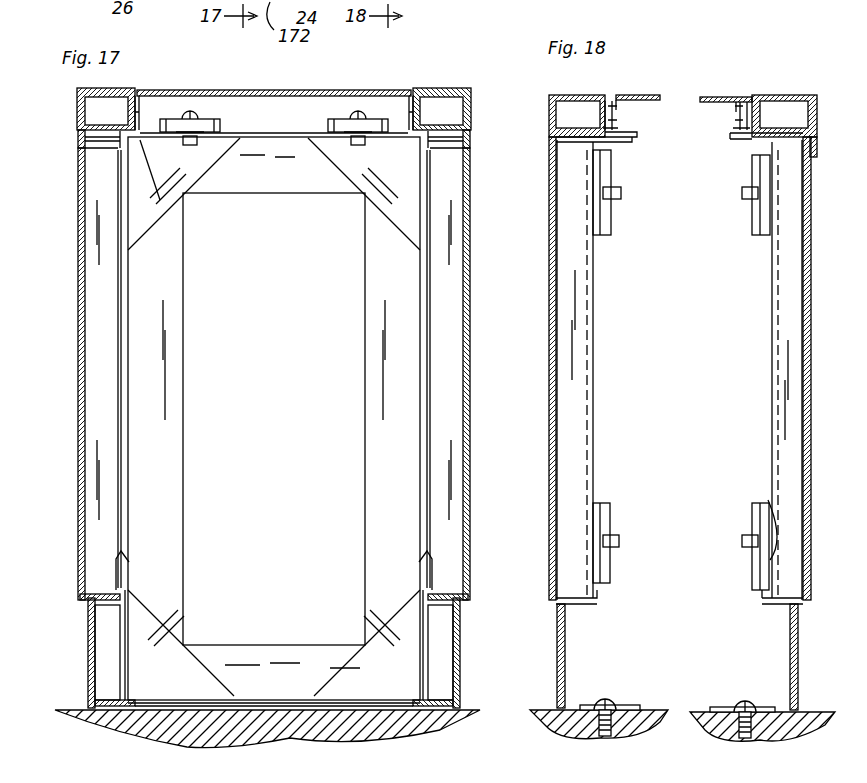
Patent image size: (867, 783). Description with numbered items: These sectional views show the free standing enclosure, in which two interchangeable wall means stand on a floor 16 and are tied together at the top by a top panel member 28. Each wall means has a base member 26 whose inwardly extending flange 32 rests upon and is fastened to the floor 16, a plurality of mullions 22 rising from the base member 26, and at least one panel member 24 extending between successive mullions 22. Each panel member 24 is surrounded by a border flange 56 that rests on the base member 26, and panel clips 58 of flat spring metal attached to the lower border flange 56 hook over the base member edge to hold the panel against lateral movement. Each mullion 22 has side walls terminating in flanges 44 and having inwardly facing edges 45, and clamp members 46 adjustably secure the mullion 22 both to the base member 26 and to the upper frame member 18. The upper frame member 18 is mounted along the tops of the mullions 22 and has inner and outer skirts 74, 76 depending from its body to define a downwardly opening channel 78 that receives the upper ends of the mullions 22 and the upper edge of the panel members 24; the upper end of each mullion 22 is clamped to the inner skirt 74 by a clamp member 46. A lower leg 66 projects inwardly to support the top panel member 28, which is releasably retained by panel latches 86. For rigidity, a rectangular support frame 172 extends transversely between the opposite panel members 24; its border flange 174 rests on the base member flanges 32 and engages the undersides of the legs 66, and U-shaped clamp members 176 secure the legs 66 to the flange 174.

In FIG. 17, the floor 16 is at (78, 710).
In FIG. 18, the floor 16 is at (550, 710).
In FIG. 17, the upper frame member 18 is at (77, 106).
In FIG. 18, the upper frame member 18 is at (565, 96).
In FIG. 18, the mullion 22 is at (549, 456).
In FIG. 17, the panel member 24 is at (80, 305).
In FIG. 17, the base member 26 is at (88, 652).
In FIG. 18, the base member 26 is at (557, 660).
In FIG. 17, the top panel member 28 is at (287, 90).
In FIG. 18, the top panel member 28 is at (725, 97).
In FIG. 17, the inwardly extending flange 32 is at (150, 705).
In FIG. 18, the inwardly extending flange 32 is at (632, 702).
In FIG. 18, the flange 44 is at (588, 446).
In FIG. 18, the inwardly facing edge 45 is at (597, 165).
In FIG. 18, the clamp member 46 is at (612, 230).
In FIG. 17, the border flange 56 is at (98, 390).
In FIG. 17, the panel clip 58 is at (130, 560).
In FIG. 17, the lower leg 66 is at (157, 133).
In FIG. 18, the inner skirt 74 is at (600, 142).
In FIG. 18, the outer skirt 76 is at (548, 147).
In FIG. 18, the channel 78 is at (570, 157).
In FIG. 18, the panel latch 86 is at (620, 118).
In FIG. 17, the support frame 172 is at (453, 262).
In FIG. 17, the border flange 174 is at (290, 140).
In FIG. 17, the clamp member 176 is at (207, 117).